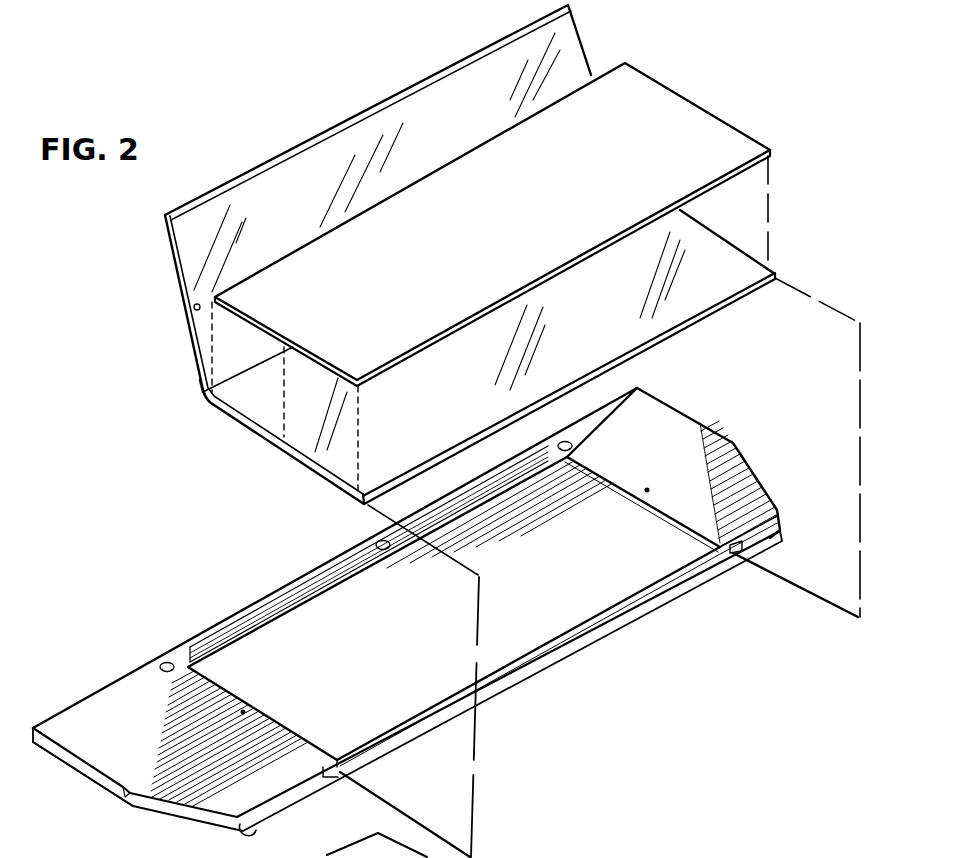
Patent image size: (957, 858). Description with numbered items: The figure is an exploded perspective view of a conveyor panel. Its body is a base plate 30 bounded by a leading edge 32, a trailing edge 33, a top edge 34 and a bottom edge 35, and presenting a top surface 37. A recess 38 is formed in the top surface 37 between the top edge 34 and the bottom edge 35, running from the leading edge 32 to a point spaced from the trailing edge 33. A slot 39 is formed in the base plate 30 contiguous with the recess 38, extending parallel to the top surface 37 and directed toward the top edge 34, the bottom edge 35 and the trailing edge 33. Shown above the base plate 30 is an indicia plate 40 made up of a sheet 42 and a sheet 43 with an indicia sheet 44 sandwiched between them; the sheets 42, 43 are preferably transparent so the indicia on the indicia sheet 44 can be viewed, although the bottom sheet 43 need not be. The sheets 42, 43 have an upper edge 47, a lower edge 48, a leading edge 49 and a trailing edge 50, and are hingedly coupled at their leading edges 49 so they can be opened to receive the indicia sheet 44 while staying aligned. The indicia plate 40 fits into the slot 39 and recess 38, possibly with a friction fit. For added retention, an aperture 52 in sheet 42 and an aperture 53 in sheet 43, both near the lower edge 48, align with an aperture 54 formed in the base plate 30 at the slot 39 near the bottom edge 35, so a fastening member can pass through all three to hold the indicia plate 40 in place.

The base plate 30 is at (416, 608).
The leading edge 32 is at (505, 680).
The trailing edge 33 is at (270, 598).
The top edge 34 is at (683, 462).
The bottom edge 35 is at (88, 770).
The top surface 37 is at (613, 457).
The recess 38 is at (600, 580).
The slot 39 is at (727, 562).
The indicia plate 40 is at (465, 274).
The sheet 42 is at (307, 170).
The sheet 43 is at (332, 457).
The indicia sheet 44 is at (718, 135).
The upper edge 47 is at (753, 250).
The lower edge 48 is at (237, 420).
The leading edge 49 is at (203, 391).
The trailing edge 50 is at (717, 310).
The aperture 52 is at (193, 307).
The aperture 53 is at (255, 440).
The aperture 54 is at (253, 708).